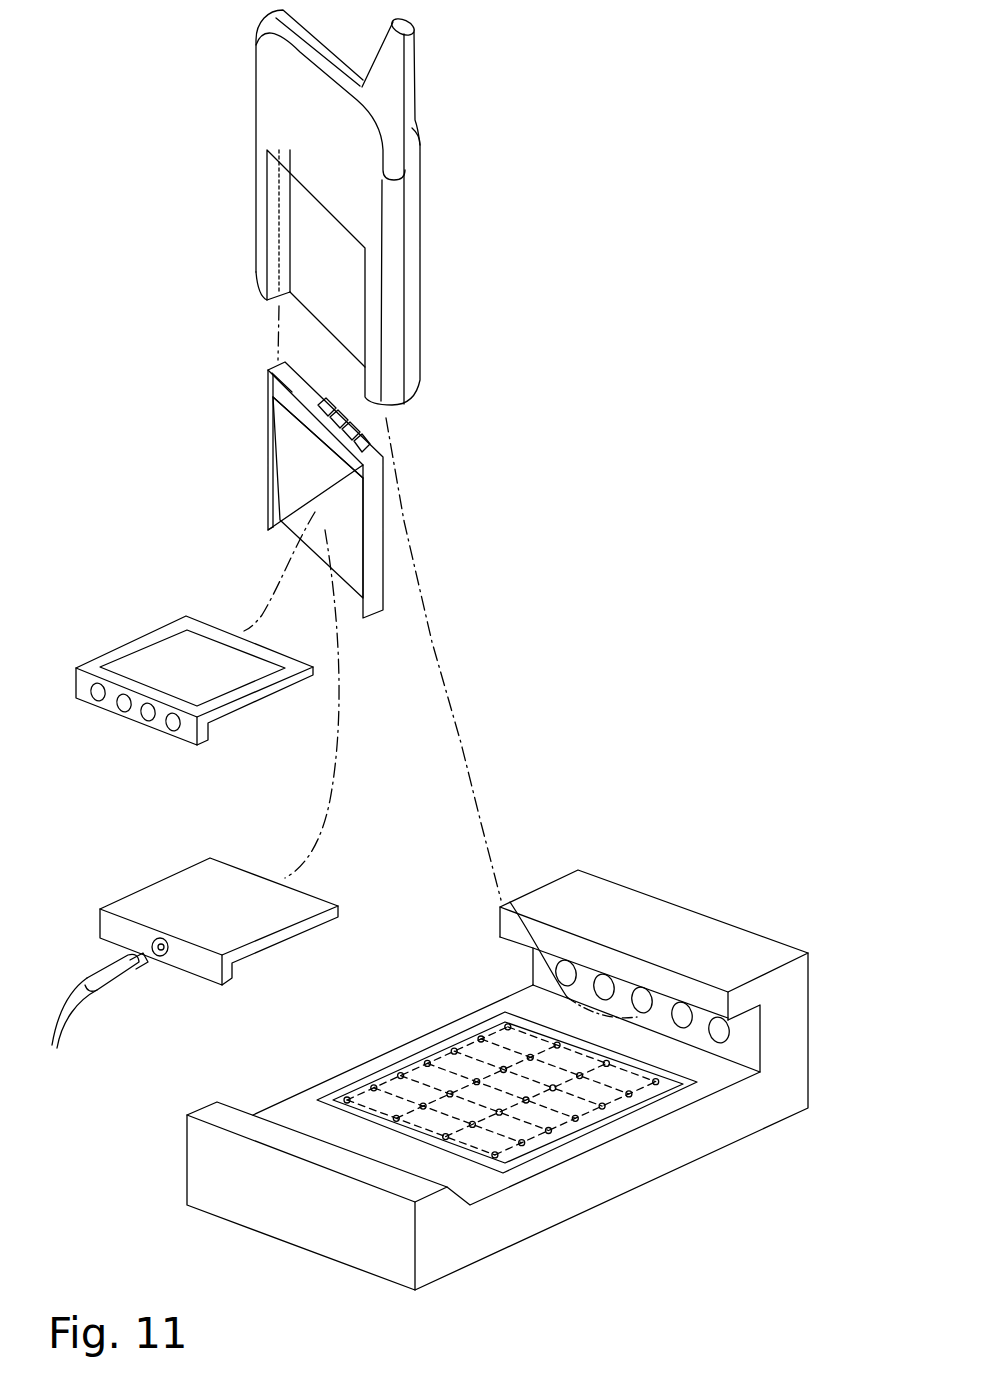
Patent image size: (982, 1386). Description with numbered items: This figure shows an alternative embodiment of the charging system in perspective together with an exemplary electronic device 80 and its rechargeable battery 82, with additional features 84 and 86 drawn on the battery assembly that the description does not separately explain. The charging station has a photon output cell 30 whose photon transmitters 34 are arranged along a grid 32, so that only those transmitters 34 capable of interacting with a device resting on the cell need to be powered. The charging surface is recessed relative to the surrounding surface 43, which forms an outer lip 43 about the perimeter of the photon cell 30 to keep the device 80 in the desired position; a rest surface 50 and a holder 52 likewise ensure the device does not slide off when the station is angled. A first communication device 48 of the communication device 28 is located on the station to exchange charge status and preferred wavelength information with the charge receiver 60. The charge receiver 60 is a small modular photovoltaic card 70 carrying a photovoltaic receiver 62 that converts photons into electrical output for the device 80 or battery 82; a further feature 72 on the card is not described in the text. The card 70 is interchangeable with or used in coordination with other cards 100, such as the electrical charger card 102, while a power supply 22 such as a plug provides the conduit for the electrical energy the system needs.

The electronic device 80 is at (362, 210).
The rechargeable battery 82 is at (270, 369).
The adapter plate 84 is at (295, 452).
The electrical contacts 86 is at (336, 418).
The photovoltaic card 70 is at (157, 633).
The photovoltaic receiver 62 is at (143, 660).
The communication device 28 is at (97, 695).
The port opening 72 is at (148, 716).
The charge receiver 60 is at (243, 712).
The card 100 is at (263, 932).
The electrical charger card 102 is at (297, 893).
The power supply 22 is at (115, 985).
The rest surface 50 is at (775, 1040).
The holder 52 is at (715, 997).
The first communication device 48 is at (641, 993).
The photon output cell 30 is at (377, 1103).
The outer lip 43 is at (538, 1167).
The grid 32 is at (503, 1140).
The photon transmitters 34 is at (472, 1127).